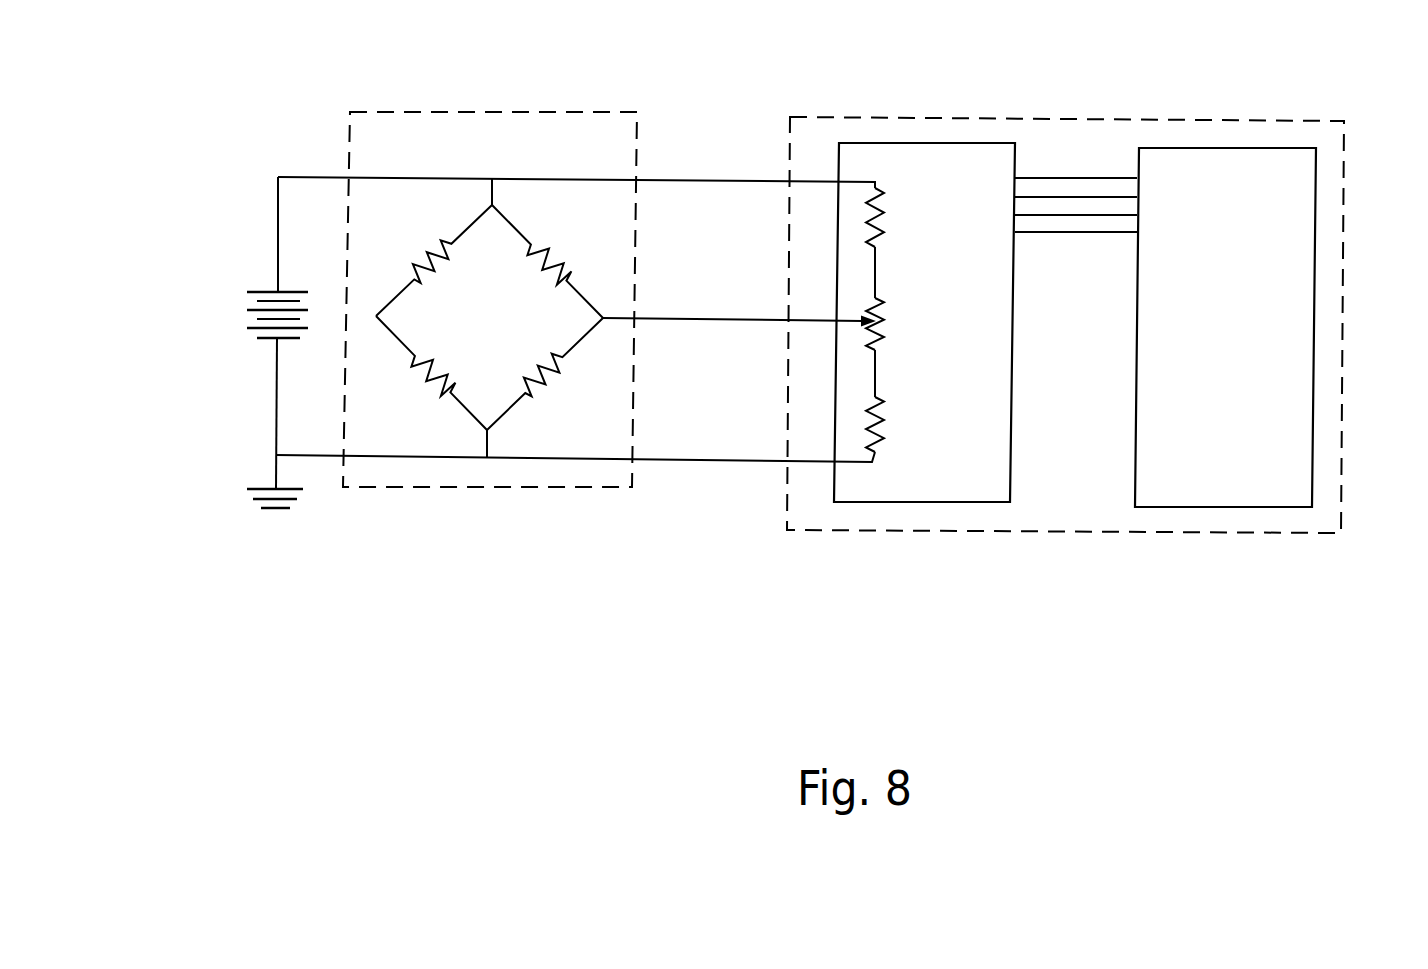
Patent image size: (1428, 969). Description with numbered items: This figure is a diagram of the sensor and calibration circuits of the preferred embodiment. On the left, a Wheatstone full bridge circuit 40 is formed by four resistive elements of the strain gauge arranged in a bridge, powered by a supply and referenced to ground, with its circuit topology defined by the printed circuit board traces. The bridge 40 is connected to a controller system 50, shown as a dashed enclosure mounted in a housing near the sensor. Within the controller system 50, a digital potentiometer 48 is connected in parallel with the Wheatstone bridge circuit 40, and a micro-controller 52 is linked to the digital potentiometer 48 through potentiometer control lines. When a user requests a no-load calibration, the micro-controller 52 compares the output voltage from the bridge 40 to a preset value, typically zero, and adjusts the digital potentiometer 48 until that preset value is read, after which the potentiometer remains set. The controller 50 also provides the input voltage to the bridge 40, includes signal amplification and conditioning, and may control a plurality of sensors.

The Wheatstone full bridge circuit 40 is at (525, 376).
The digital potentiometer 48 is at (961, 394).
The controller system 50 is at (1090, 333).
The micro-controller 52 is at (1264, 397).